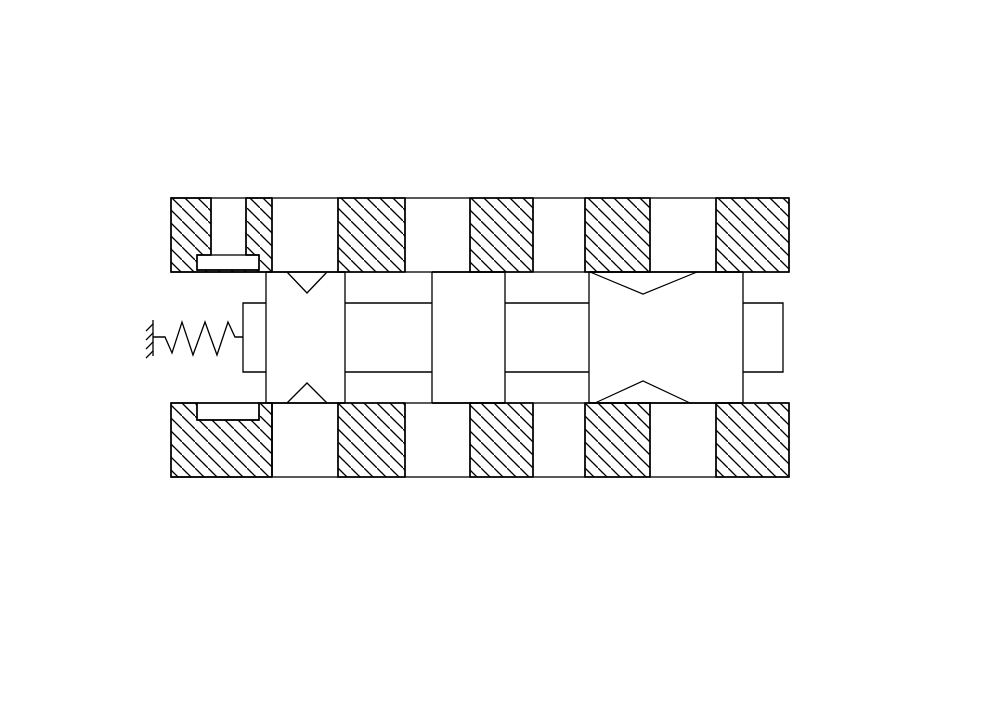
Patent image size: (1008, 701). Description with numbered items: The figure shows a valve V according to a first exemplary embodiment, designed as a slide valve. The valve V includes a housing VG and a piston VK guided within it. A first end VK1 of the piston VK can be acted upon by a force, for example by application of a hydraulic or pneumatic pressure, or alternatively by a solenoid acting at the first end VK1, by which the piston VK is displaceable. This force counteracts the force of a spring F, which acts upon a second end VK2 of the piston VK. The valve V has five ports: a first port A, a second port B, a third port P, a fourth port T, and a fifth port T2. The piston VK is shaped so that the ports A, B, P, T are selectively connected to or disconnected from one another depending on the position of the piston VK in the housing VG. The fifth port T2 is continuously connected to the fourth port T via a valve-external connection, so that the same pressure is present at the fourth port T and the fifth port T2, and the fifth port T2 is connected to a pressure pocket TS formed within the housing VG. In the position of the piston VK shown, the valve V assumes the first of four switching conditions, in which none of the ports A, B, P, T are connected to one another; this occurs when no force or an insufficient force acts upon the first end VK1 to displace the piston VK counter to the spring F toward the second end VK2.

The valve V is at (152, 195).
The housing VG is at (372, 225).
The fifth port T2 is at (228, 216).
The pressure pocket TS is at (220, 411).
The spring F is at (172, 316).
The piston VK is at (707, 375).
The first end VK1 is at (783, 323).
The second end VK2 is at (243, 355).
The first port A is at (305, 356).
The third port P is at (437, 356).
The second port B is at (559, 356).
The fourth port T is at (683, 356).